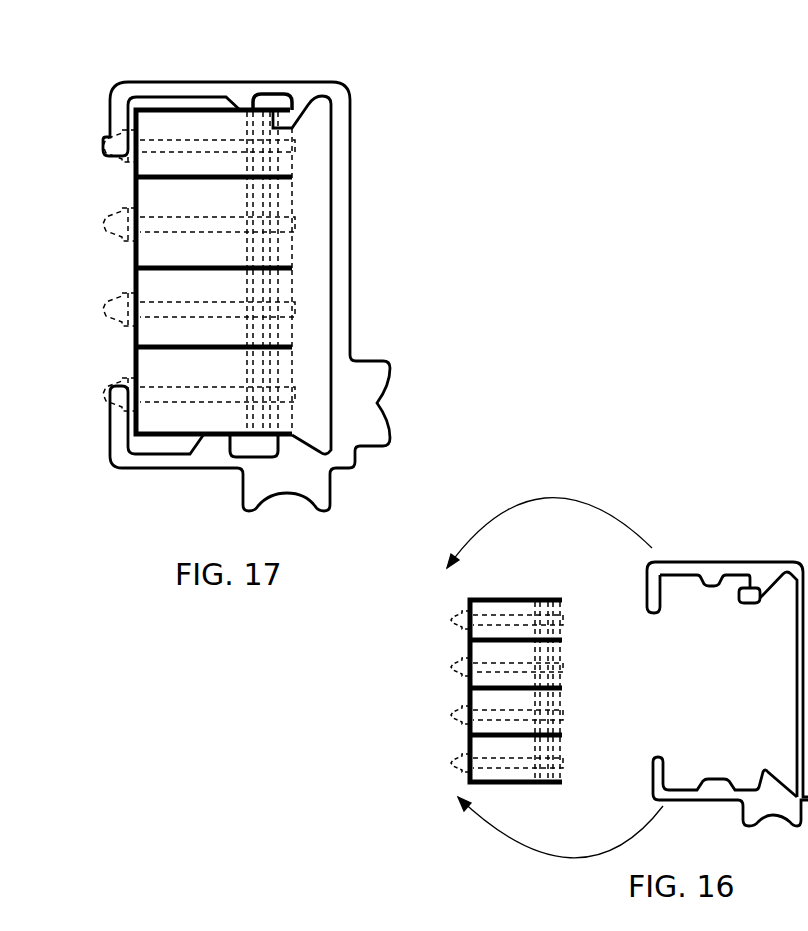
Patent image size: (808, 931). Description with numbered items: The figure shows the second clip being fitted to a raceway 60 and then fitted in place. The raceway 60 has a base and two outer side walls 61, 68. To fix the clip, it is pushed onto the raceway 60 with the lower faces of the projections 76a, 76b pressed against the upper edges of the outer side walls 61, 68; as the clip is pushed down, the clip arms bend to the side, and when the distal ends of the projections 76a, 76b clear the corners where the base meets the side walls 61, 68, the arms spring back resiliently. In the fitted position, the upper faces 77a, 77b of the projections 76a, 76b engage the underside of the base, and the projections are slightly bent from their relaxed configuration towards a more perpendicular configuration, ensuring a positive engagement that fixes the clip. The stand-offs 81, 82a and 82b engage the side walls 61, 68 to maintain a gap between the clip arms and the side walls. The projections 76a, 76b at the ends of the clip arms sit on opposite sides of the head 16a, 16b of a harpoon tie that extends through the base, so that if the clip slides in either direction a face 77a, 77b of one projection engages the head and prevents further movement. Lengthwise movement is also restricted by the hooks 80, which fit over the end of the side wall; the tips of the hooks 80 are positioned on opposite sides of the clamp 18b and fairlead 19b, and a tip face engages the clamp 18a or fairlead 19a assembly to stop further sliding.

In FIG. 17, the outer side wall 61 is at (167, 108).
In FIG. 16, the outer side wall 61 is at (530, 600).
In FIG. 17, the stand-off 82b is at (243, 98).
In FIG. 17, the hook 80 is at (307, 110).
In FIG. 17, the upper face of projection 77b is at (138, 133).
In FIG. 17, the head of harpoon tie 16b is at (112, 157).
In FIG. 17, the clamp 18b is at (248, 168).
In FIG. 17, the fairlead 19b is at (293, 165).
In FIG. 17, the raceway 60 is at (133, 268).
In FIG. 17, the clamp 18a is at (248, 367).
In FIG. 17, the fairlead 19a is at (293, 367).
In FIG. 17, the head of harpoon tie 16a is at (113, 387).
In FIG. 17, the upper face of projection 77a is at (138, 403).
In FIG. 17, the stand-off 81 is at (303, 443).
In FIG. 17, the stand-off 82a is at (203, 432).
In FIG. 17, the outer side wall 68 is at (155, 436).
In FIG. 16, the outer side wall 68 is at (533, 785).
In FIG. 16, the projection 76b is at (645, 597).
In FIG. 16, the projection 76a is at (650, 777).